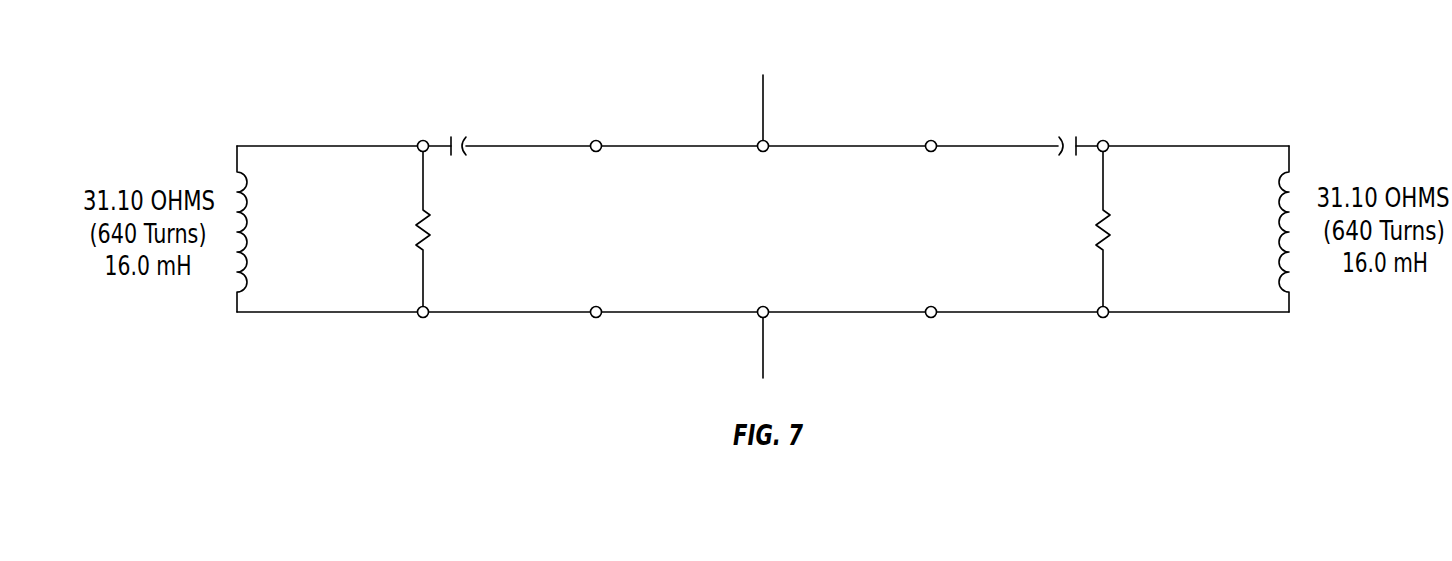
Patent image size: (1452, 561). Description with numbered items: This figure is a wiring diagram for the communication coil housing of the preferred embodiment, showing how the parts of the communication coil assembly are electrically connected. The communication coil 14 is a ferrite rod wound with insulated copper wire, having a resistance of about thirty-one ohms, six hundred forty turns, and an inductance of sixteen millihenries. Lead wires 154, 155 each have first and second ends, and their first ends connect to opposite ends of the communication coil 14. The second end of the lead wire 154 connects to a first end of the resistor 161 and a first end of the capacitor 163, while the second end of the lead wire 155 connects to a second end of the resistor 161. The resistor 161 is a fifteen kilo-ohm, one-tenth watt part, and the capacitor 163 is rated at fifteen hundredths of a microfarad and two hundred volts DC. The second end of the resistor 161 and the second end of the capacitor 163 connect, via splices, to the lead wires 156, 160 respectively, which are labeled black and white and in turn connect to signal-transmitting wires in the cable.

The communication coil 14 is at (763, 229).
The lead wire 154 is at (763, 122).
The lead wire 155 is at (763, 335).
The lead wire 156 is at (763, 345).
The lead wire 160 is at (762, 134).
The resistor 161 is at (763, 229).
The capacitor 163 is at (807, 94).